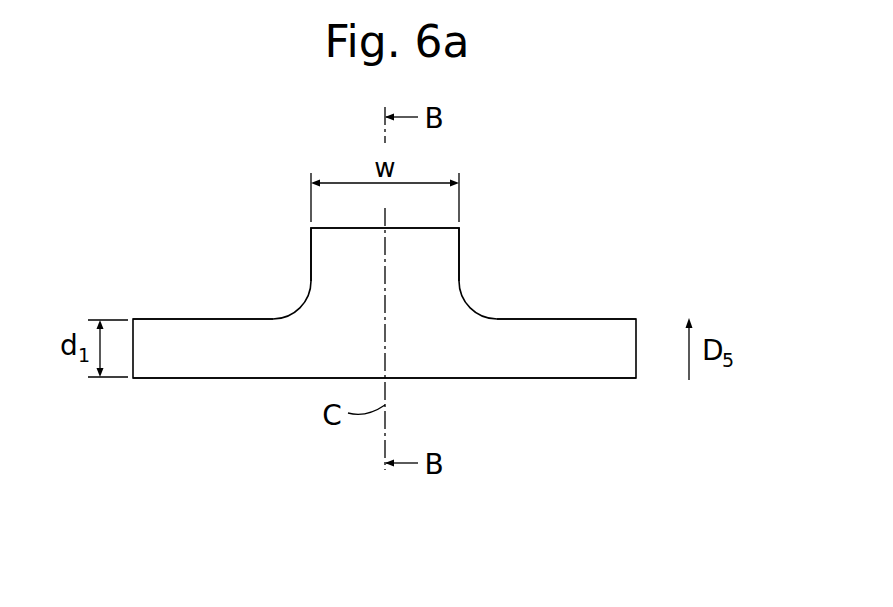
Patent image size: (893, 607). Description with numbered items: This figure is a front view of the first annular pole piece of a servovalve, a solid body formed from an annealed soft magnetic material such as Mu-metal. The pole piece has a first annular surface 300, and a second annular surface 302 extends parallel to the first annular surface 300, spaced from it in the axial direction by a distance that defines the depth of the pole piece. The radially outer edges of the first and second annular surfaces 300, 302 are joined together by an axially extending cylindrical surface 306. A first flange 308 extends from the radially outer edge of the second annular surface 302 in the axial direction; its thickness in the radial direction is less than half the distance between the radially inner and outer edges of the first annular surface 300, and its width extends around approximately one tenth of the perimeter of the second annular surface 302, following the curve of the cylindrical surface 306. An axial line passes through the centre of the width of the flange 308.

The first annular surface 300 is at (233, 378).
The second annular surface 302 is at (203, 317).
The axially extending cylindrical surface 306 is at (580, 370).
The first flange 308 is at (327, 253).